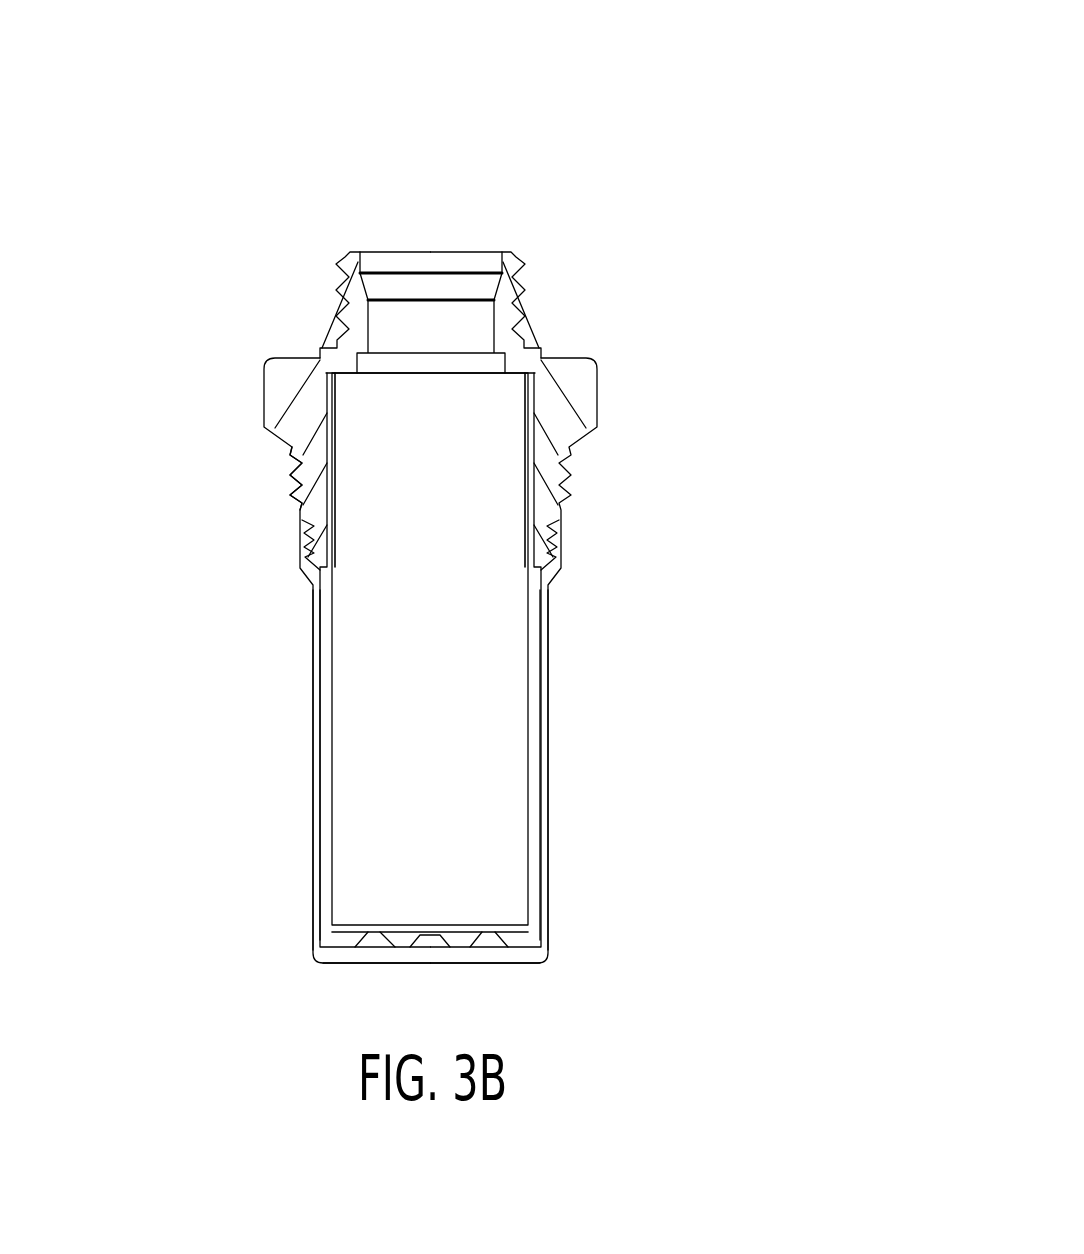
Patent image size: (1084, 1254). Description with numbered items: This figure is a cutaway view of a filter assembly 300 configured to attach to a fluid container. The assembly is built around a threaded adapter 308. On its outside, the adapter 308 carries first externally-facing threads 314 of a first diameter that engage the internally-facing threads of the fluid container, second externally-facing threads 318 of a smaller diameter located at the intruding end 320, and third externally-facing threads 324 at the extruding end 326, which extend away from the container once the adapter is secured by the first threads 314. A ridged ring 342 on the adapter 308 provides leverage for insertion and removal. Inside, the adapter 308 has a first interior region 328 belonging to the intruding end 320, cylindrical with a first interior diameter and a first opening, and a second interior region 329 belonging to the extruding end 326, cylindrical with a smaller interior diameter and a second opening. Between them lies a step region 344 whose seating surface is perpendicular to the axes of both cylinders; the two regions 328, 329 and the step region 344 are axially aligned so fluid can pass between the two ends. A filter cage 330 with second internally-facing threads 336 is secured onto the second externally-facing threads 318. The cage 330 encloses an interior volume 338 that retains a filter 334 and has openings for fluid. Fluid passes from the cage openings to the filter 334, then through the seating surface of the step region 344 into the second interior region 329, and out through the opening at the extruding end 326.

The filter assembly 300 is at (630, 876).
The threaded adapter 308 is at (425, 172).
The first externally-facing threads 314 is at (278, 473).
The second externally-facing threads 318 is at (284, 538).
The intruding end 320 is at (637, 443).
The third externally-facing threads 324 is at (318, 281).
The extruding end 326 is at (580, 235).
The first interior region 328 is at (450, 477).
The second interior region 329 is at (410, 316).
The filter cage 330 is at (285, 847).
The filter 334 is at (305, 723).
The second internally-facing threads 336 is at (574, 556).
The interior volume 338 is at (467, 759).
The ridged ring 342 is at (332, 653).
The step region 344 is at (450, 384).